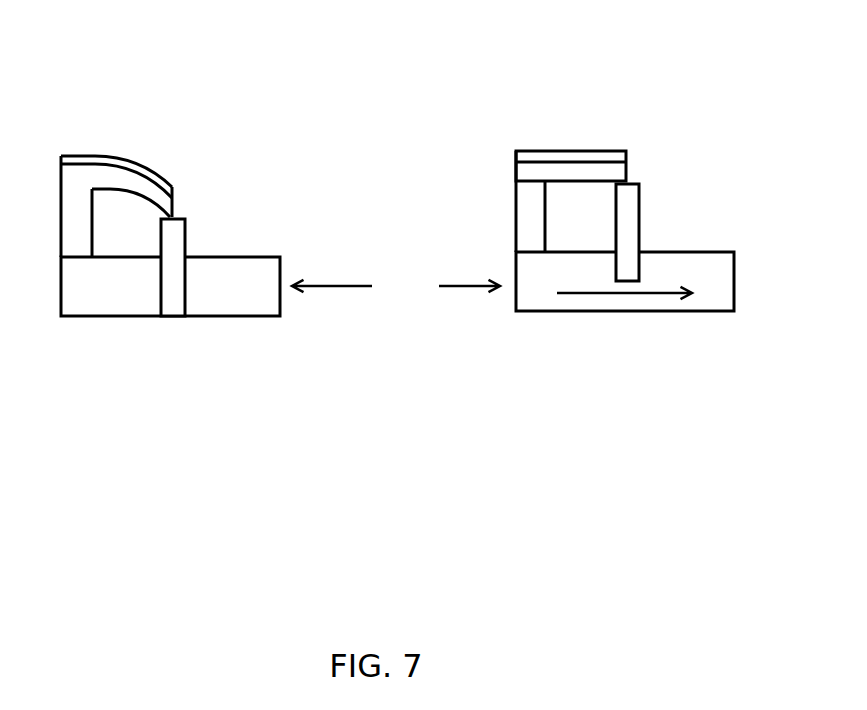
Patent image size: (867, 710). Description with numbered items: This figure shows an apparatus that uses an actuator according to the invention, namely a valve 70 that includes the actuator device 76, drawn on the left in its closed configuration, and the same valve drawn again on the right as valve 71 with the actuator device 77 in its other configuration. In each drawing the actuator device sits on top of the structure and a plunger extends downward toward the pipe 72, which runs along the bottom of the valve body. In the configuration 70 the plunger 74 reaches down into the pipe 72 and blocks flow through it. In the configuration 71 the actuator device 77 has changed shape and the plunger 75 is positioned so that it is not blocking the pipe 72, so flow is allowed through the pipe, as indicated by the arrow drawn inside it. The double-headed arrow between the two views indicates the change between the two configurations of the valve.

The valve 70 is at (170, 186).
The valve 71 is at (625, 182).
The pipe 72 is at (396, 286).
The plunger 74 is at (204, 219).
The plunger 75 is at (656, 207).
The actuator device 76 is at (172, 154).
The actuator device 77 is at (609, 131).